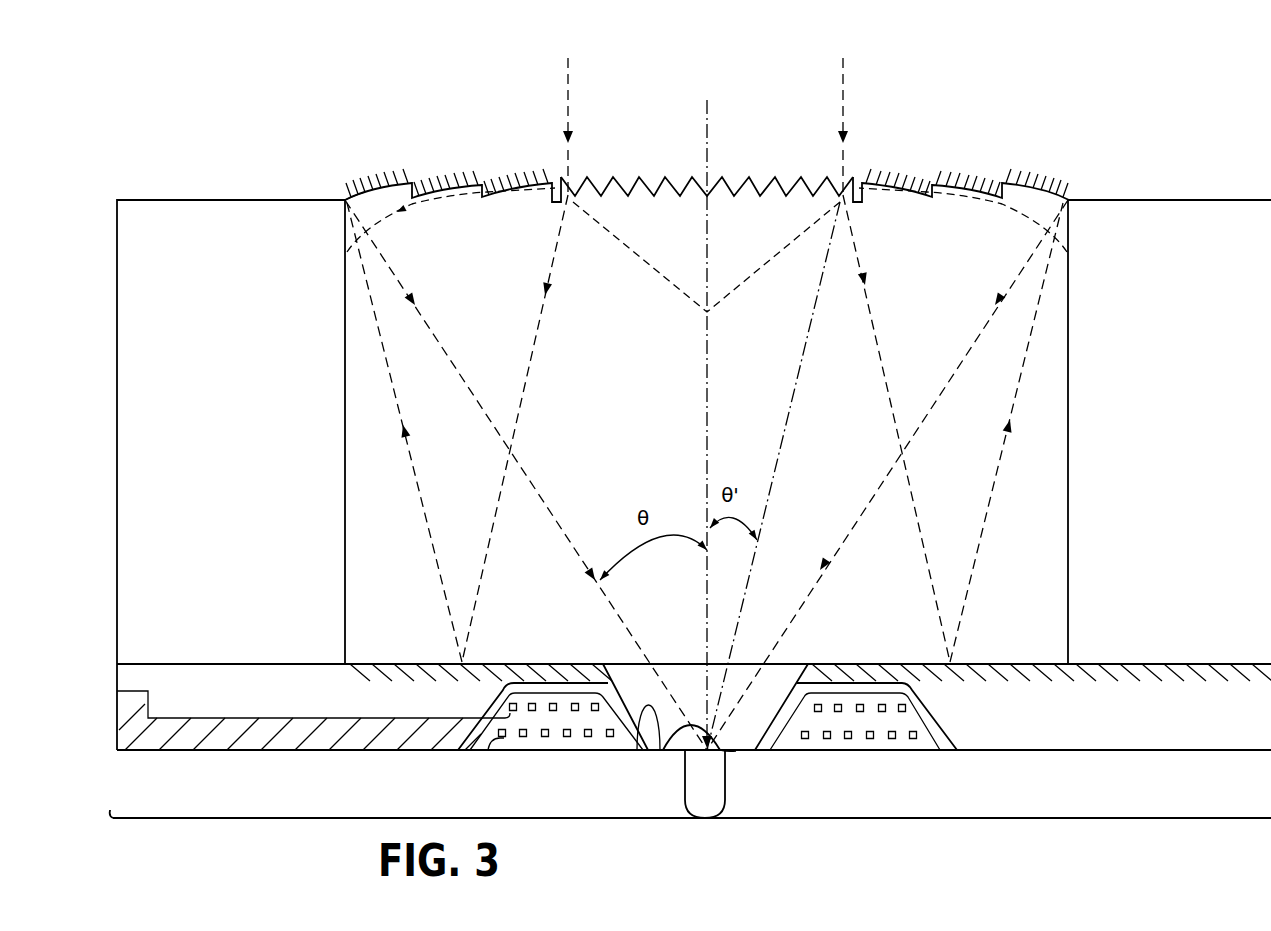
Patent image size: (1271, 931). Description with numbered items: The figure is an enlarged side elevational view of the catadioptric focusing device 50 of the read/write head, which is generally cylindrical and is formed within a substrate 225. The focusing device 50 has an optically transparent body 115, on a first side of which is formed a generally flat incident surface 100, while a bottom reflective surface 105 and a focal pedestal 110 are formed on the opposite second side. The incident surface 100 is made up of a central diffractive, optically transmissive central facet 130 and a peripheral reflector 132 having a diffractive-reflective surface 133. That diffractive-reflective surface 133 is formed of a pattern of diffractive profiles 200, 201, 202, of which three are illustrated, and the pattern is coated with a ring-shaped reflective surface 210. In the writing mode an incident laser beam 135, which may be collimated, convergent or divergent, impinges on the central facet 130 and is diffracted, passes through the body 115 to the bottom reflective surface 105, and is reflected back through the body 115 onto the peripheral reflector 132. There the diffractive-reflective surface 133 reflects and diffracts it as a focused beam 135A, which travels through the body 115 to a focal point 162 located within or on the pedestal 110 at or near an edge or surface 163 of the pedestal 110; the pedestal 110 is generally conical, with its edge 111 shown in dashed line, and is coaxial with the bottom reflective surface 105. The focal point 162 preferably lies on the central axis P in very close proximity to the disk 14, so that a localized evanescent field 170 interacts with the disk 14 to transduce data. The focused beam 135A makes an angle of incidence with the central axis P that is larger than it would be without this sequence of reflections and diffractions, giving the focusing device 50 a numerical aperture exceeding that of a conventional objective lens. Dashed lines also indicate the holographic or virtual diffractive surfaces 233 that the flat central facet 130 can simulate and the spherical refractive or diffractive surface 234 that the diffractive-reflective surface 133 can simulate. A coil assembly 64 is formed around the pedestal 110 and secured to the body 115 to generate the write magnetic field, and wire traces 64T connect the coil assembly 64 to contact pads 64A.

The focusing device 50 is at (695, 48).
The incident surface 100 is at (320, 190).
The central facet 130 is at (741, 178).
The diffractive profile 200 is at (353, 197).
The diffractive profile 201 is at (392, 180).
The diffractive profile 202 is at (520, 184).
The reflective surface 210 is at (910, 190).
The peripheral reflector 132 is at (1010, 172).
The diffractive-reflective surface 133 is at (1058, 198).
The laser beam 135 is at (563, 138).
The focused beam 135A is at (563, 508).
The central axis P is at (703, 137).
The diffractive surfaces 233 is at (617, 237).
The spherical refractive or diffractive surface 234 is at (397, 212).
The body 115 is at (368, 522).
The substrate 225 is at (1172, 216).
The bottom reflective surface 105 is at (343, 677).
The pedestal 110 is at (632, 652).
The edge 111 is at (643, 743).
The coil assembly 64 is at (943, 753).
The contact pads 64A is at (133, 697).
The wire traces 64T is at (298, 752).
The focal point 162 is at (663, 748).
The edge or surface of the pedestal 163 is at (740, 751).
The evanescent field 170 is at (727, 808).
The disk 14 is at (820, 818).